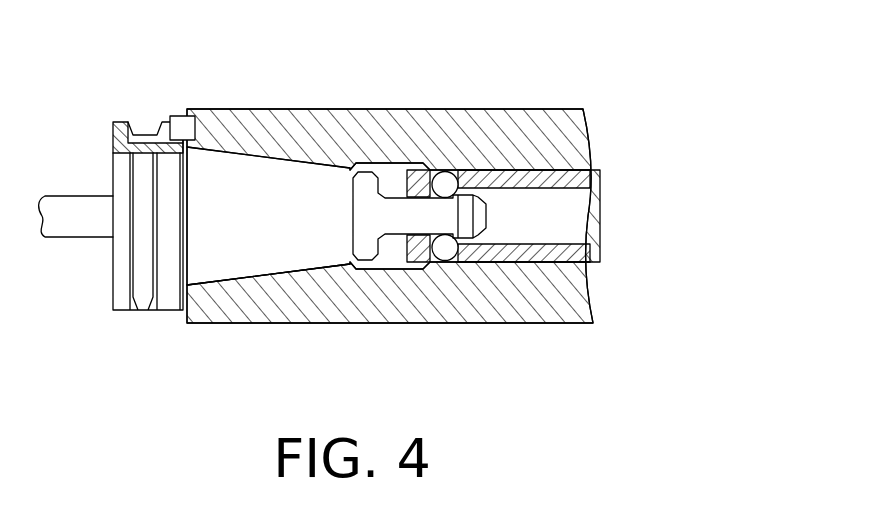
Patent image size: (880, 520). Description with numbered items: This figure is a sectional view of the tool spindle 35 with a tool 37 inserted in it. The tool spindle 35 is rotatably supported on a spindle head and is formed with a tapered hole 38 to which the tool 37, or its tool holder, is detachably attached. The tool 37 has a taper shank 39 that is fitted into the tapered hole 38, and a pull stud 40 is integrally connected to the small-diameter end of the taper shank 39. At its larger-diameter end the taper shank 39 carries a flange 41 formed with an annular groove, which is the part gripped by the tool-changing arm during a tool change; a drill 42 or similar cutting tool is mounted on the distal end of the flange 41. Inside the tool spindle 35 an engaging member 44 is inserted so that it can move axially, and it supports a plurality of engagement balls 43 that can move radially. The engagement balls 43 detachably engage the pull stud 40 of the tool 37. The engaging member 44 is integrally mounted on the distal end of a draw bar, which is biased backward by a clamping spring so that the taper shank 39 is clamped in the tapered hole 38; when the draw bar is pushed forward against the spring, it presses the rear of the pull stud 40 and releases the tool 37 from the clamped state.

The tool spindle 35 is at (330, 122).
The tool 37 is at (148, 117).
The tapered hole 38 is at (312, 263).
The taper shank 39 is at (250, 175).
The pull stud 40 is at (397, 225).
The flange 41 is at (118, 278).
The drill 42 is at (72, 203).
The engagement balls 43 is at (445, 172).
The engaging member 44 is at (558, 175).